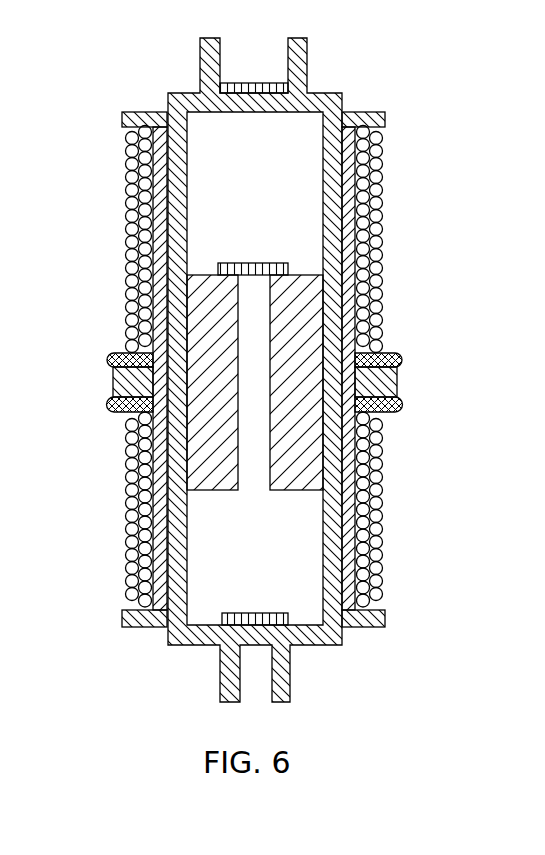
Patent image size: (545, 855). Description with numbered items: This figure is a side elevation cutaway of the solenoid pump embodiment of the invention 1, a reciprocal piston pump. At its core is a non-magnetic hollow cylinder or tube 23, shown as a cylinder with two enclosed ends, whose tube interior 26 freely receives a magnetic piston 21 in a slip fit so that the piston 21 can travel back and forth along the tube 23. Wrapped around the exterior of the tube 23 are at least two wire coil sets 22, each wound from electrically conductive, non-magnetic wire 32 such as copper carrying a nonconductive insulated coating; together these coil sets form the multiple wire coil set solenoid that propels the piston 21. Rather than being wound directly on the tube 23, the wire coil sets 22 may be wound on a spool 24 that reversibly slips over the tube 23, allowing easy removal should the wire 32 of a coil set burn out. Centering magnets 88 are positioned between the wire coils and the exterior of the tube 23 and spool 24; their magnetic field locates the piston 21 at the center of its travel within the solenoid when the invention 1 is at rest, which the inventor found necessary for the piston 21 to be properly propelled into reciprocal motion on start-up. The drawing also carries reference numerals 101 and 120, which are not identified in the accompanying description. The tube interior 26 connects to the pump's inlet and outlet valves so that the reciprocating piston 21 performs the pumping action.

The invention 1 is at (277, 367).
The piston 21 is at (297, 272).
The wire coil sets 22 is at (255, 368).
The tube 23 is at (342, 108).
The spool 24 is at (385, 115).
The tube interior 26 is at (298, 552).
The wire 32 is at (370, 258).
The centering magnets 88 is at (108, 360).
The spacer / pad 101 is at (270, 83).
The bearing sleeve assembly 120 is at (269, 368).